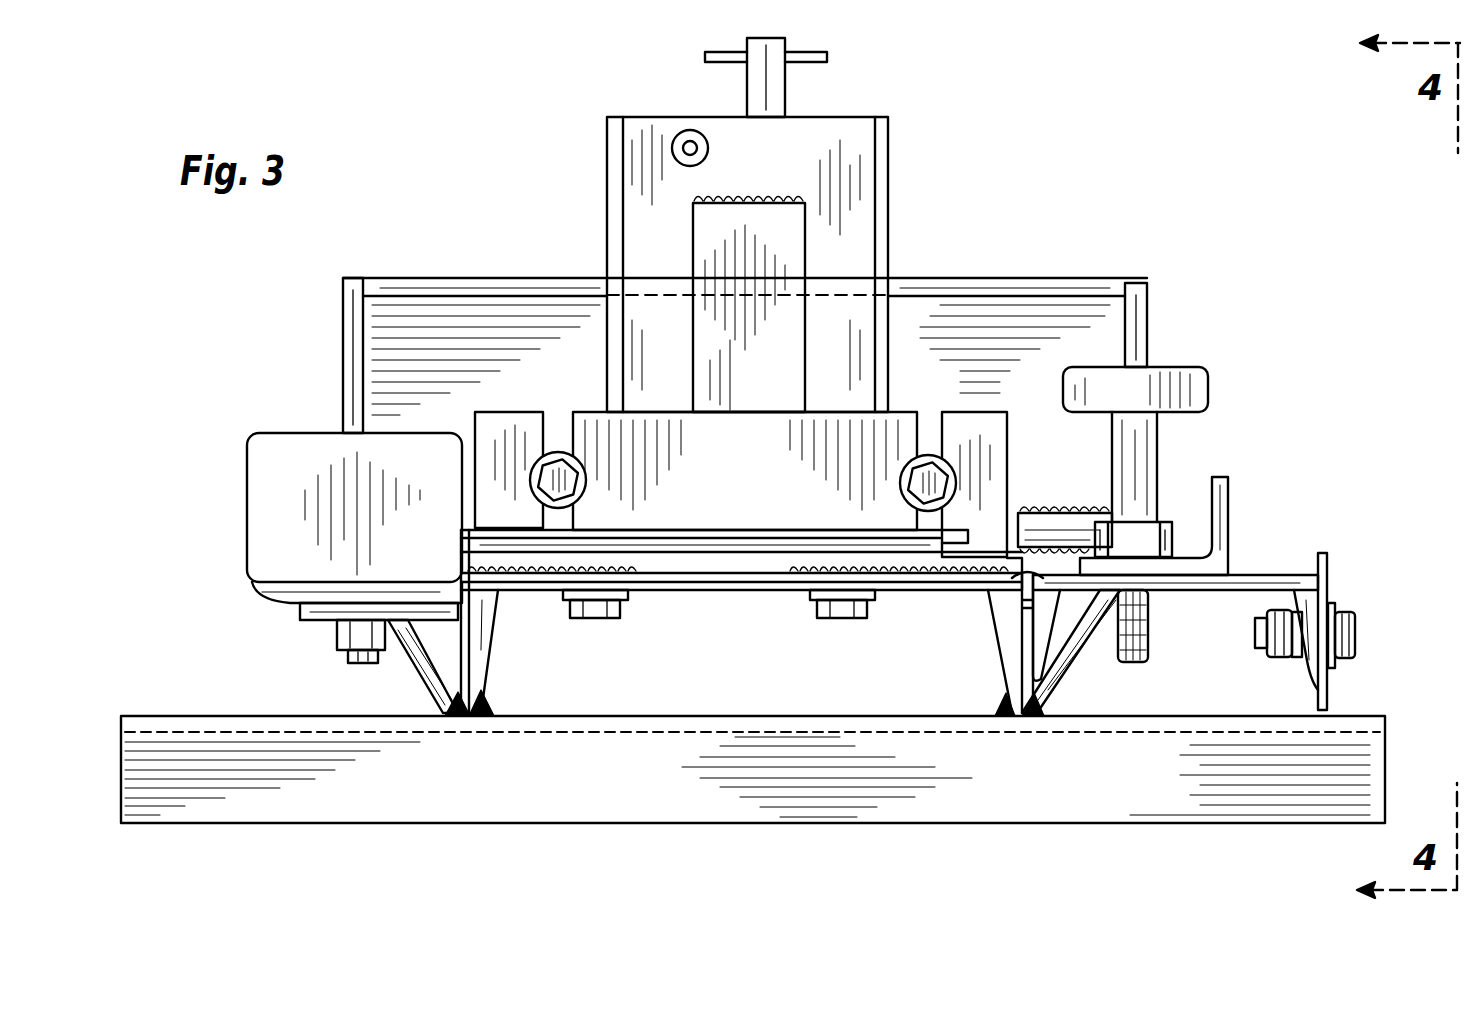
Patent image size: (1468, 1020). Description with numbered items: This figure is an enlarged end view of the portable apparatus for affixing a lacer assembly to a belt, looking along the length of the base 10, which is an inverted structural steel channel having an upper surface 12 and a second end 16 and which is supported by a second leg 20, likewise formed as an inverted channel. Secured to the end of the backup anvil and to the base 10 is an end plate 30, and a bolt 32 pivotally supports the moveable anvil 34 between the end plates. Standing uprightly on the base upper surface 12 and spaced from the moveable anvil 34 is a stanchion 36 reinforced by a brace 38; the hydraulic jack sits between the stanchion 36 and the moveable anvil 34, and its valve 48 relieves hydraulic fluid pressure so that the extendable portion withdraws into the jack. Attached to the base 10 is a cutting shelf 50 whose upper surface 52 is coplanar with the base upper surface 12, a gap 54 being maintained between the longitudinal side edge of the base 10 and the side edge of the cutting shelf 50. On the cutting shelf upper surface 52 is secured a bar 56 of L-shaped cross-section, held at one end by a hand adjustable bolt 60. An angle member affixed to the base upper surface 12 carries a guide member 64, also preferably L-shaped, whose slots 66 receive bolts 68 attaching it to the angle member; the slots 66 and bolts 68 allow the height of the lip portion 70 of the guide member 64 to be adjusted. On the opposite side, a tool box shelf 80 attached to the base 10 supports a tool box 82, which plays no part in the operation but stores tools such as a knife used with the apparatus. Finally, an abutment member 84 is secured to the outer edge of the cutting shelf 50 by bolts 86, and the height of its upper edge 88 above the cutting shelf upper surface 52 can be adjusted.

The base 10 is at (975, 585).
The upper surface 12 is at (692, 548).
The second end 16 is at (776, 578).
The second leg 20 is at (1055, 805).
The end plate 30 is at (1141, 318).
The bolt 32 is at (350, 352).
The moveable anvil 34 is at (466, 320).
The stanchion 36 is at (860, 172).
The brace 38 is at (728, 233).
The valve 48 is at (772, 90).
The cutting shelf 50 is at (1302, 595).
The upper surface 52 is at (1260, 578).
The gap 54 is at (1025, 597).
The bar 56 is at (1219, 477).
The hand adjustable bolt 60 is at (1190, 349).
The guide member 64 is at (862, 437).
The slots 66 is at (552, 430).
The bolt 68 is at (568, 490).
The lip portion 70 is at (990, 547).
The tool box shelf 80 is at (307, 614).
The tool box 82 is at (243, 520).
The abutment member 84 is at (1323, 597).
The bolts 86 is at (1346, 633).
The upper edge 88 is at (1324, 556).